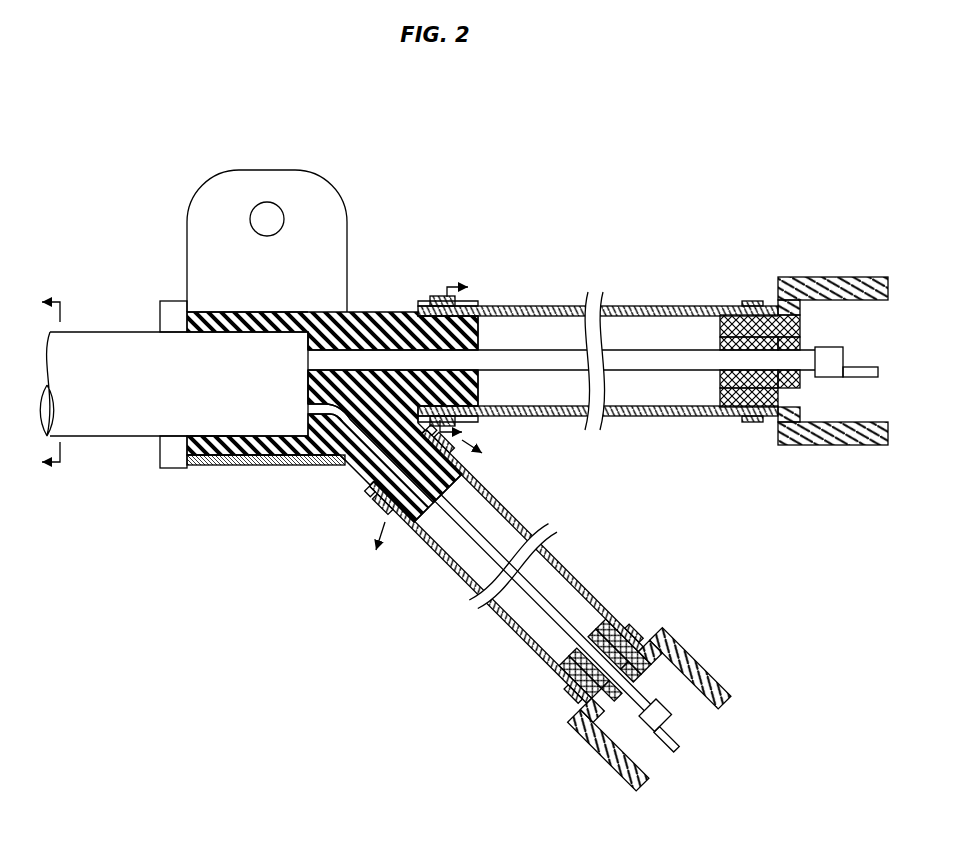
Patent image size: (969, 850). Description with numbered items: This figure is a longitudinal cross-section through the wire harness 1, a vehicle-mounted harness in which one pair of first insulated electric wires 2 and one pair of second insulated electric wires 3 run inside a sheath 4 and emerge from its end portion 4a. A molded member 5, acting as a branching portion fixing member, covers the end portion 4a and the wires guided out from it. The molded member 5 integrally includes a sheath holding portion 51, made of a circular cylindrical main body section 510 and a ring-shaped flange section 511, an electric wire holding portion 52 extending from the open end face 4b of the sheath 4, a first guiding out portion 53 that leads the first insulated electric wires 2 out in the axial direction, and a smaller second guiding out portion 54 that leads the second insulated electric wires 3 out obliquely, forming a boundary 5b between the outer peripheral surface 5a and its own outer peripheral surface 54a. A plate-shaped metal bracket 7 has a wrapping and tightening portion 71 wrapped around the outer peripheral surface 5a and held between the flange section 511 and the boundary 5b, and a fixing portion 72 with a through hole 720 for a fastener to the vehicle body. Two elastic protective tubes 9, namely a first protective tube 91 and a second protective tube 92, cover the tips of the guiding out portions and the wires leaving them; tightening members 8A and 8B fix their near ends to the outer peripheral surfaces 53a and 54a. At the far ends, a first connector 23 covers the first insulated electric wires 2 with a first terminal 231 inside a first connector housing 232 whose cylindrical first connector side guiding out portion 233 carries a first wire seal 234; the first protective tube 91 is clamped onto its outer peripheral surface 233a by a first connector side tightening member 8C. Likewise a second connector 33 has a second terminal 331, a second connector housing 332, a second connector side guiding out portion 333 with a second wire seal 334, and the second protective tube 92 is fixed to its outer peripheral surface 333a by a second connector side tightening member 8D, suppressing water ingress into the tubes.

The wire harness 1 is at (549, 158).
The first insulated electric wires 2 is at (497, 352).
The second insulated electric wires 3 is at (480, 545).
The sheath 4 is at (174, 421).
The end portion of the sheath 4a is at (212, 427).
The open end face of the sheath 4b is at (312, 418).
The molded member 5 is at (332, 368).
The outer peripheral surface of the molded member 5a is at (275, 313).
The boundary 5b is at (328, 463).
The bracket 7 is at (286, 219).
The tightening member 8A is at (455, 302).
The tightening member 8B is at (385, 515).
The first connector side tightening member 8C is at (752, 301).
The second connector side tightening member 8D is at (572, 698).
The elastic protective tubes 9 is at (598, 357).
The first connector 23 is at (785, 363).
The second connector 33 is at (681, 688).
The sheath holding portion 51 is at (142, 344).
The electric wire holding portion 52 is at (337, 330).
The first guiding out portion 53 is at (373, 335).
The outer peripheral surface of the first guiding out portion 53a is at (404, 325).
The second guiding out portion 54 is at (367, 460).
The outer peripheral surface of the second guiding out portion 54a is at (372, 473).
The wrapping and tightening portion 71 is at (258, 465).
The fixing portion 72 is at (330, 200).
The first protective tube 91 is at (652, 417).
The second protective tube 92 is at (530, 640).
The first terminal 231 is at (830, 380).
The first connector housing 232 is at (860, 445).
The first connector side guiding out portion 233 is at (745, 420).
The outer peripheral surface of the first connector side guiding out portion 233a is at (772, 425).
The first wire seal 234 is at (725, 400).
The second terminal 331 is at (690, 758).
The second connector housing 332 is at (740, 708).
The second connector side guiding out portion 333 is at (635, 625).
The outer peripheral surface of the second connector side guiding out portion 333a is at (650, 652).
The second wire seal 334 is at (603, 623).
The main body section 510 is at (210, 320).
The flange section 511 is at (175, 262).
The through hole 720 is at (279, 207).